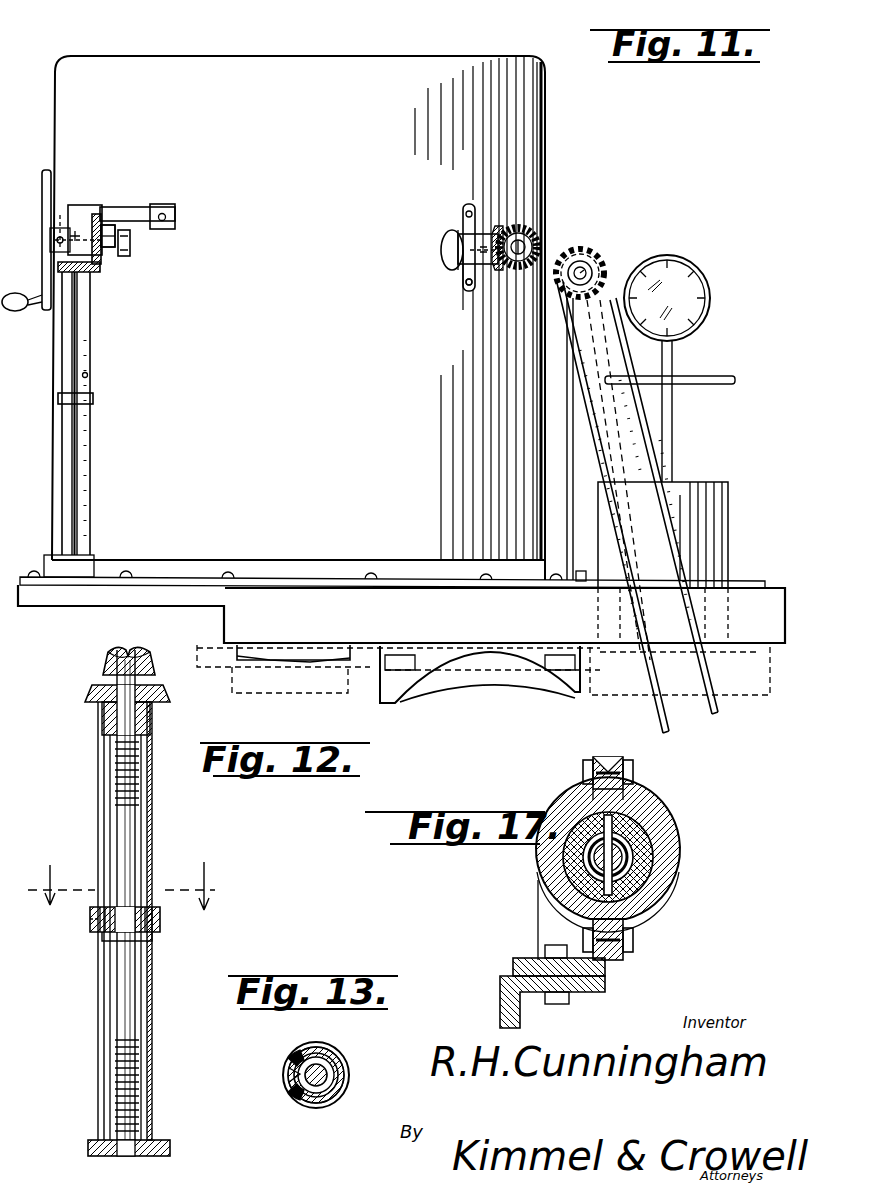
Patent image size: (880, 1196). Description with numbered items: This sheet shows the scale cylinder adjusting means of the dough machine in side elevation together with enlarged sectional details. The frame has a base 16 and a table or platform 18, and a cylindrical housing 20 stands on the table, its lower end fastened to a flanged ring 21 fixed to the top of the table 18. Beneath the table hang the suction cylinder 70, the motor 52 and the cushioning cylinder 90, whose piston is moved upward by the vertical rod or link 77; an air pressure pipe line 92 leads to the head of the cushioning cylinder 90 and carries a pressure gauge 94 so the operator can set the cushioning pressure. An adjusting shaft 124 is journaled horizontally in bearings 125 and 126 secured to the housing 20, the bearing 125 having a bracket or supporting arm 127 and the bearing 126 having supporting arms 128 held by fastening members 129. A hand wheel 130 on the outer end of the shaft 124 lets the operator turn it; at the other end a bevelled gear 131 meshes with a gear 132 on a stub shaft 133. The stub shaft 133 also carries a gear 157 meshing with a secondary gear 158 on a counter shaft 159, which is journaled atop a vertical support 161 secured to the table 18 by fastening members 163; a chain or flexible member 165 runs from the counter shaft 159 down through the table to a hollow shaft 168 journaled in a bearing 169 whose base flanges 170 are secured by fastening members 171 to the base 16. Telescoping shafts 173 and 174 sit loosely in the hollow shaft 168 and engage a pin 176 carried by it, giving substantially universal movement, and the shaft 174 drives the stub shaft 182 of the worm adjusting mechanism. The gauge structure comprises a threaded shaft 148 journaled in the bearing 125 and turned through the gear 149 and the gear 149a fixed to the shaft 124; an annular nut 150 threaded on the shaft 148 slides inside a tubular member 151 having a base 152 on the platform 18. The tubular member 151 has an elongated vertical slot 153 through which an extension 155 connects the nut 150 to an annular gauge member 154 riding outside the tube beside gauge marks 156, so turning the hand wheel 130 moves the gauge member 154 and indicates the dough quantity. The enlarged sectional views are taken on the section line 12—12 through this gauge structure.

In FIG. 11, the section line 12 is at (130, 226).
In FIG. 17, the base 16 is at (500, 992).
In FIG. 11, the table or platform 18 is at (752, 600).
In FIG. 11, the annular or cylindrical housing 20 is at (548, 168).
In FIG. 11, the flanged ring 21 is at (430, 570).
In FIG. 11, the power member or motor 52 is at (460, 680).
In FIG. 11, the suction cylinder 70 is at (325, 658).
In FIG. 11, the rod or link 77 is at (645, 675).
In FIG. 11, the cushioning cylinder 90 is at (712, 480).
In FIG. 11, the air pressure pipe line 92 is at (673, 446).
In FIG. 11, the pressure gauge 94 is at (711, 298).
In FIG. 11, the adjusting shaft 124 is at (120, 250).
In FIG. 12, the adjusting shaft 124 is at (140, 650).
In FIG. 11, the bearing 125 is at (82, 208).
In FIG. 12, the bearing 125 is at (108, 652).
In FIG. 11, the bearing 126 is at (450, 238).
In FIG. 11, the bracket or supporting arm 127 is at (132, 210).
In FIG. 11, the supporting arms 128 is at (465, 272).
In FIG. 11, the fastening members 129 is at (472, 290).
In FIG. 11, the hand wheel 130 is at (50, 190).
In FIG. 11, the bevelled gear 131 is at (478, 232).
In FIG. 11, the gear 132 is at (525, 228).
In FIG. 11, the stub shaft 133 is at (562, 240).
In FIG. 12, the threaded shaft 148 is at (136, 838).
In FIG. 13, the threaded shaft 148 is at (317, 1082).
In FIG. 11, the gear 149 is at (95, 272).
In FIG. 12, the gear 149 is at (92, 690).
In FIG. 11, the gear 149a is at (98, 222).
In FIG. 12, the annular nut 150 is at (153, 940).
In FIG. 13, the annular nut 150 is at (338, 1088).
In FIG. 11, the tubular member 151 is at (92, 432).
In FIG. 12, the tubular member 151 is at (155, 1057).
In FIG. 13, the tubular member 151 is at (348, 1075).
In FIG. 12, the base 152 is at (170, 1149).
In FIG. 11, the elongated vertical slot 153 is at (75, 338).
In FIG. 12, the elongated vertical slot 153 is at (127, 936).
In FIG. 13, the elongated vertical slot 153 is at (295, 1053).
In FIG. 11, the annular gauge member 154 is at (93, 397).
In FIG. 12, the annular gauge member 154 is at (92, 922).
In FIG. 13, the annular gauge member 154 is at (342, 1060).
In FIG. 13, the extension 155 is at (292, 1078).
In FIG. 11, the gauge marks 156 is at (88, 378).
In FIG. 11, the gear 157 is at (585, 252).
In FIG. 11, the secondary gear 158 is at (597, 258).
In FIG. 11, the counter shaft 159 is at (583, 273).
In FIG. 11, the vertical support 161 is at (567, 455).
In FIG. 11, the fastening members 163 is at (572, 581).
In FIG. 11, the chain or flexible member 165 is at (640, 430).
In FIG. 17, the hollow shaft 168 is at (657, 882).
In FIG. 17, the bearing 169 is at (679, 864).
In FIG. 17, the base flanges 170 is at (528, 957).
In FIG. 17, the fastening members 171 is at (560, 1004).
In FIG. 17, the tubular shaft 173 is at (646, 835).
In FIG. 17, the telescoping shaft 174 is at (653, 850).
In FIG. 17, the pin 176 is at (611, 808).
In FIG. 17, the stub shaft 182 is at (598, 856).